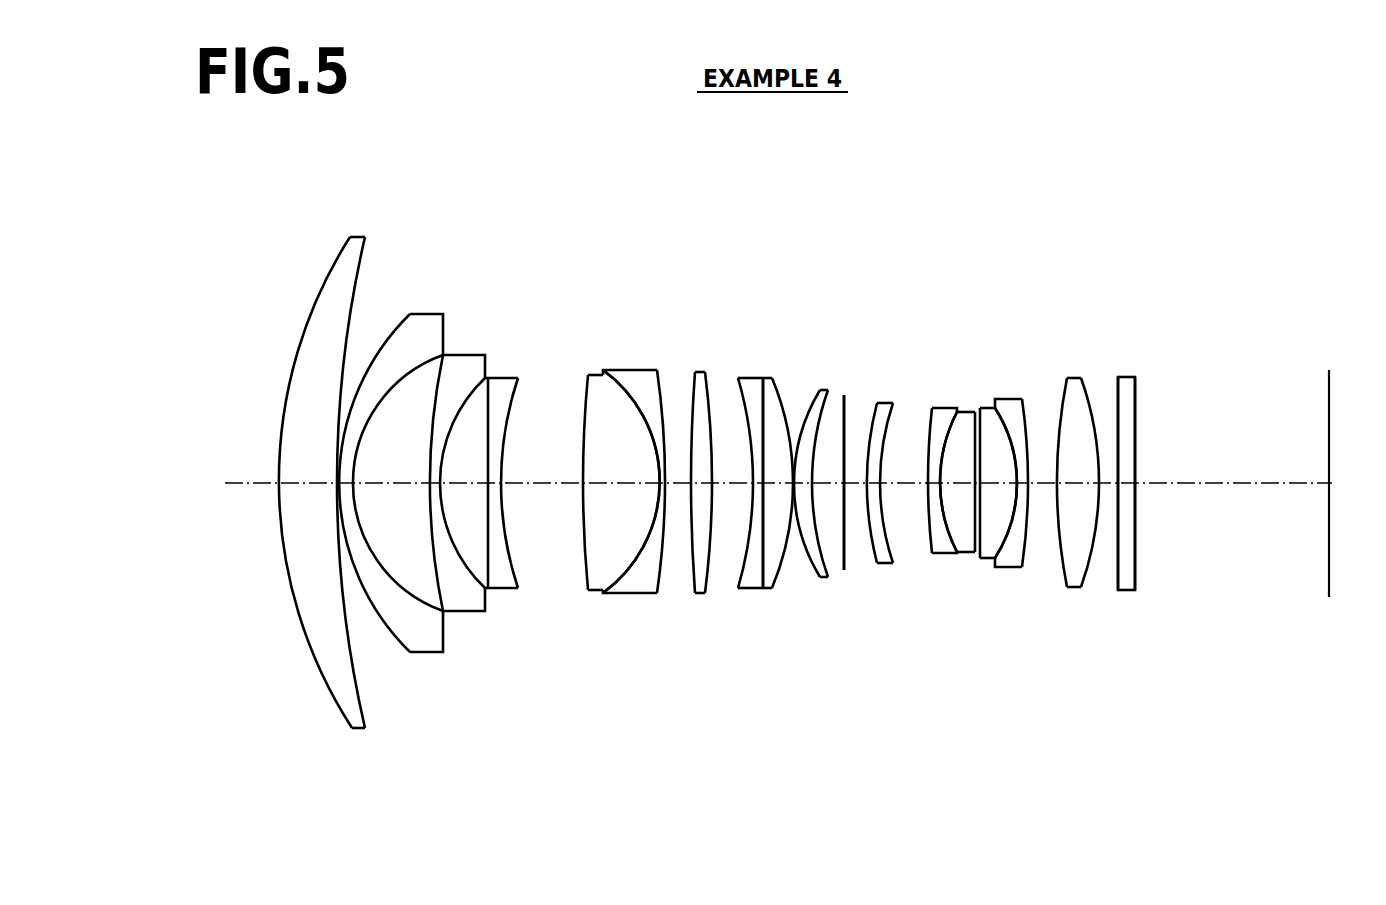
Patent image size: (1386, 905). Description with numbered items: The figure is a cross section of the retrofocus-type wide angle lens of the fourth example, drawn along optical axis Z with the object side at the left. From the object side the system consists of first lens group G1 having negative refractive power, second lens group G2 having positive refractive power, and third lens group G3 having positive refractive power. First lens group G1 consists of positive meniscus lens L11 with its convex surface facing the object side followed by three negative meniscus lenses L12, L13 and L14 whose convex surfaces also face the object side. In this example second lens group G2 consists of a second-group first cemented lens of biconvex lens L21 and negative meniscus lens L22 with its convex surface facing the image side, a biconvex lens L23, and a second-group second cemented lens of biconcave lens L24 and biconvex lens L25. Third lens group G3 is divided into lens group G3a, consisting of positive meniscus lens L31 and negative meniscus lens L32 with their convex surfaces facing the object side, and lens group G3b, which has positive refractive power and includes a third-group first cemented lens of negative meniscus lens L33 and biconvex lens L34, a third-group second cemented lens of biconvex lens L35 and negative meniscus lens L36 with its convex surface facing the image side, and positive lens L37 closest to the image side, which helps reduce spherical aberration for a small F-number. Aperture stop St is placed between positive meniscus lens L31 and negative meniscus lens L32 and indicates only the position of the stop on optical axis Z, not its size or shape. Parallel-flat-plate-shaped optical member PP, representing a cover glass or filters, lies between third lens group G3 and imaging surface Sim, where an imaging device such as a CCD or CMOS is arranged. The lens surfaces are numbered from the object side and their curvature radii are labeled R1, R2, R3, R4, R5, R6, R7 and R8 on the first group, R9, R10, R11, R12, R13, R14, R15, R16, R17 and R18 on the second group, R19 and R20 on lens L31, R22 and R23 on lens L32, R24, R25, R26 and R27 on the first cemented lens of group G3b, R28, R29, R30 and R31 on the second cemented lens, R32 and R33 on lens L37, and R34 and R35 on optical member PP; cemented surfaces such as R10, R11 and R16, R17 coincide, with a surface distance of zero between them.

The optical axis Z is at (769, 443).
The first lens group G1 is at (380, 482).
The second lens group G2 is at (657, 507).
The third lens group G3 is at (980, 508).
The 3a-th lens group G3a is at (845, 515).
The 3b-th lens group G3b is at (1037, 526).
The positive meniscus lens L11 is at (296, 483).
The negative meniscus lens L12 is at (391, 514).
The negative meniscus lens L13 is at (448, 500).
The negative meniscus lens L14 is at (499, 514).
The biconvex lens L21 is at (591, 514).
The negative meniscus lens L22 is at (621, 527).
The biconvex lens L23 is at (664, 514).
The biconcave lens L24 is at (720, 537).
The biconvex lens L25 is at (757, 497).
The positive meniscus lens L31 is at (818, 533).
The negative meniscus lens L32 is at (875, 547).
The negative meniscus lens L33 is at (937, 533).
The biconvex lens L34 is at (971, 547).
The biconvex lens L35 is at (1027, 544).
The negative meniscus lens L36 is at (1055, 529).
The lens having positive refractive power L37 is at (1112, 533).
The aperture stop St is at (842, 448).
The optical member PP is at (1178, 558).
The imaging surface Sim is at (1333, 453).
The curvature radius of first surface R1 is at (289, 490).
The curvature radius of second surface R2 is at (322, 520).
The curvature radius of third surface R3 is at (374, 575).
The curvature radius of fourth surface R4 is at (398, 579).
The curvature radius of fifth surface R5 is at (433, 596).
The curvature radius of sixth surface R6 is at (462, 590).
The curvature radius of seventh surface R7 is at (491, 607).
The curvature radius of eighth surface R8 is at (515, 590).
The curvature radius of ninth surface R9 is at (555, 606).
The curvature radius of tenth surface R10 is at (604, 588).
The curvature radius of eleventh surface R11 is at (606, 588).
The curvature radius of twelfth surface R12 is at (621, 603).
The curvature radius of thirteenth surface R13 is at (655, 587).
The curvature radius of fourteenth surface R14 is at (676, 604).
The curvature radius of fifteenth surface R15 is at (715, 590).
The curvature radius of sixteenth surface R16 is at (735, 618).
The curvature radius of seventeenth surface R17 is at (736, 618).
The curvature radius of eighteenth surface R18 is at (766, 590).
The curvature radius of nineteenth surface R19 is at (803, 613).
The curvature radius of twentieth surface R20 is at (831, 596).
The curvature radius of twenty-second surface R22 is at (865, 620).
The curvature radius of twenty-third surface R23 is at (891, 604).
The curvature radius of twenty-fourth surface R24 is at (926, 623).
The curvature radius of twenty-fifth surface R25 is at (955, 610).
The curvature radius of twenty-sixth surface R26 is at (956, 610).
The curvature radius of twenty-seventh surface R27 is at (986, 625).
The curvature radius of twenty-eighth surface R28 is at (1007, 605).
The curvature radius of twenty-ninth surface R29 is at (1041, 634).
The curvature radius of thirtieth surface R30 is at (1039, 634).
The curvature radius of thirty-first surface R31 is at (1068, 601).
The curvature radius of thirty-second surface R32 is at (1107, 608).
The curvature radius of thirty-third surface R33 is at (1131, 590).
The curvature radius of thirty-fourth surface R34 is at (1167, 607).
The curvature radius of thirty-fifth surface R35 is at (1190, 590).